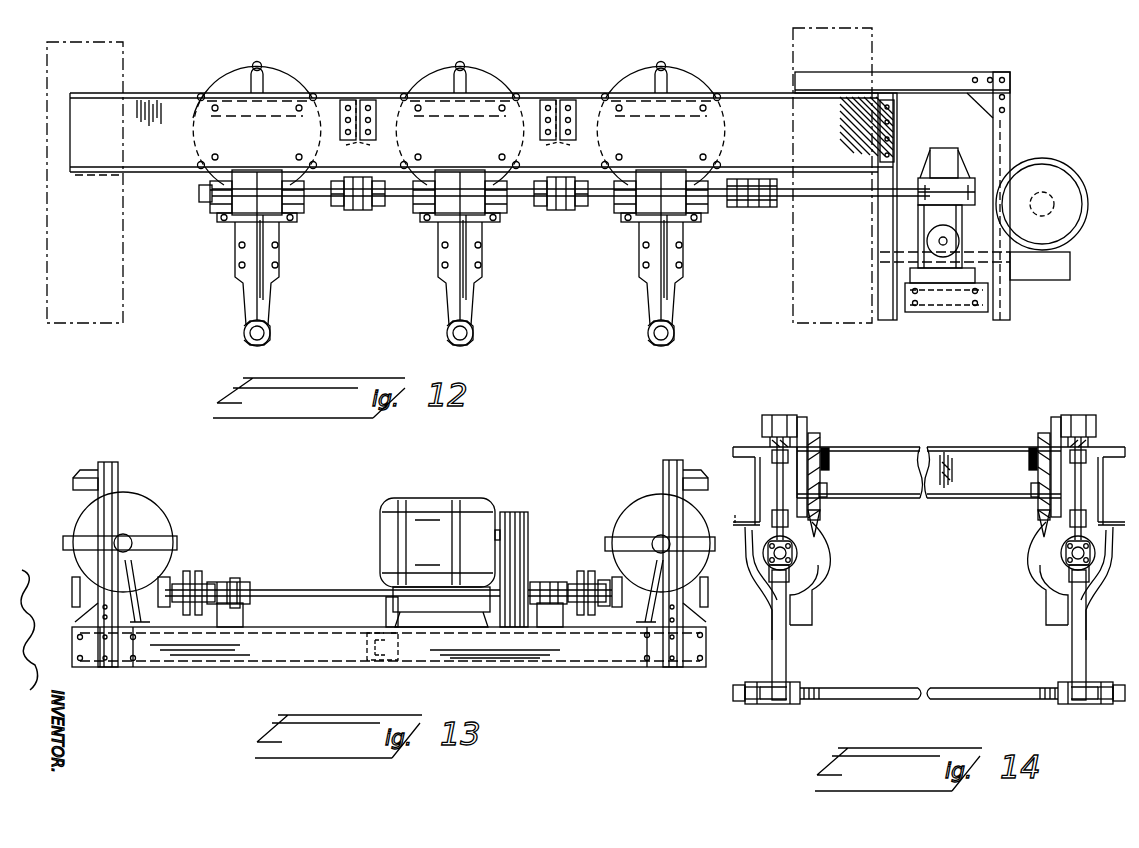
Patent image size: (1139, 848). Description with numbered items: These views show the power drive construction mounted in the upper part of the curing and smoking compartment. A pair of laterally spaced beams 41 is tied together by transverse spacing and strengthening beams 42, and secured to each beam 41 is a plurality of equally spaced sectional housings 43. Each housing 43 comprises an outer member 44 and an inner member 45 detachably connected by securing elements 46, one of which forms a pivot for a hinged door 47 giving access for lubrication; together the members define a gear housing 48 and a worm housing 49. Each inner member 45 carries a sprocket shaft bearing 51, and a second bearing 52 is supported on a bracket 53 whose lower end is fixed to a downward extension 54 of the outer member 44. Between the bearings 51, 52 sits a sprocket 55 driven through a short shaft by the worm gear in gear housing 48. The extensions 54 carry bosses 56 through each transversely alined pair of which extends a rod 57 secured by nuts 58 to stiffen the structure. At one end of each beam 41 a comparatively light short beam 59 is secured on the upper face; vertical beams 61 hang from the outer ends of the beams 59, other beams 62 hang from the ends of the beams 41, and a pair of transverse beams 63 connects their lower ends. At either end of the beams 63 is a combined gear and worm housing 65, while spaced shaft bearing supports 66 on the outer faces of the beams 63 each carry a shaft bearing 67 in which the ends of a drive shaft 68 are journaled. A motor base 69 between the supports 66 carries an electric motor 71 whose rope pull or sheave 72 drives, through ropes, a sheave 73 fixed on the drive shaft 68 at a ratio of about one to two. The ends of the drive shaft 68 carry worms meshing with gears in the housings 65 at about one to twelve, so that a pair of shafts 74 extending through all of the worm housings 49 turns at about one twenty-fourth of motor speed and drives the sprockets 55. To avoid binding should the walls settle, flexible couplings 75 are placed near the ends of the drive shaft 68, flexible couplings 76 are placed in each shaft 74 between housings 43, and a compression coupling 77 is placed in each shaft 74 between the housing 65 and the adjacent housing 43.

In FIG. 12, the beam 41 is at (742, 110).
In FIG. 14, the beam 41 is at (733, 448).
In FIG. 12, the spacing and strengthening beam 42 is at (356, 103).
In FIG. 14, the spacing and strengthening beam 42 is at (948, 462).
In FIG. 12, the sectional housing 43 is at (290, 88).
In FIG. 14, the sectional housing 43 is at (800, 482).
In FIG. 14, the outer member 44 is at (770, 480).
In FIG. 14, the inner member 45 is at (787, 523).
In FIG. 12, the securing element 46 is at (459, 66).
In FIG. 14, the hinged door 47 is at (782, 417).
In FIG. 12, the gear housing 48 is at (226, 82).
In FIG. 14, the gear housing 48 is at (770, 472).
In FIG. 12, the worm housing 49 is at (223, 192).
In FIG. 14, the worm housing 49 is at (800, 550).
In FIG. 14, the sprocket shaft bearing 51 is at (810, 480).
In FIG. 14, the second bearing 52 is at (823, 477).
In FIG. 14, the bracket 53 is at (1027, 583).
In FIG. 12, the downward extension 54 is at (450, 297).
In FIG. 14, the downward extension 54 is at (773, 653).
In FIG. 14, the sprocket 55 is at (814, 482).
In FIG. 12, the boss 56 is at (457, 333).
In FIG. 14, the boss 56 is at (770, 700).
In FIG. 12, the rod 57 is at (648, 333).
In FIG. 14, the rod 57 is at (953, 687).
In FIG. 12, the nut 58 is at (653, 343).
In FIG. 14, the nut 58 is at (755, 688).
In FIG. 12, the short beam 59 is at (903, 83).
In FIG. 12, the beam 61 is at (1007, 127).
In FIG. 13, the beam 61 is at (107, 503).
In FIG. 12, the beam 62 is at (900, 251).
In FIG. 13, the transverse beam 63 is at (210, 640).
In FIG. 12, the combined gear and worm housing 65 is at (943, 163).
In FIG. 13, the combined gear and worm housing 65 is at (143, 537).
In FIG. 13, the shaft bearing support 66 is at (243, 620).
In FIG. 13, the shaft bearing 67 is at (233, 580).
In FIG. 12, the drive shaft 68 is at (940, 240).
In FIG. 13, the drive shaft 68 is at (322, 592).
In FIG. 12, the motor base 69 is at (1043, 265).
In FIG. 13, the motor base 69 is at (392, 622).
In FIG. 12, the electric motor 71 is at (1033, 187).
In FIG. 13, the electric motor 71 is at (465, 532).
In FIG. 13, the rope pull or sheave 72 is at (513, 557).
In FIG. 13, the sheave 73 is at (507, 615).
In FIG. 12, the shaft 74 is at (403, 200).
In FIG. 13, the flexible coupling 75 is at (197, 580).
In FIG. 12, the flexible coupling 76 is at (365, 212).
In FIG. 12, the compression coupling 77 is at (775, 212).